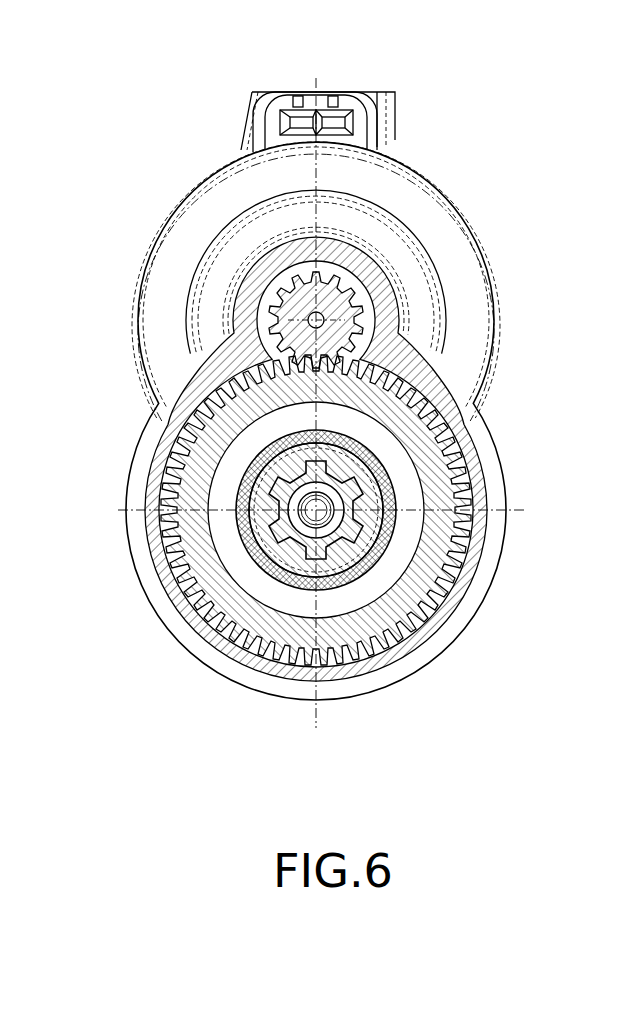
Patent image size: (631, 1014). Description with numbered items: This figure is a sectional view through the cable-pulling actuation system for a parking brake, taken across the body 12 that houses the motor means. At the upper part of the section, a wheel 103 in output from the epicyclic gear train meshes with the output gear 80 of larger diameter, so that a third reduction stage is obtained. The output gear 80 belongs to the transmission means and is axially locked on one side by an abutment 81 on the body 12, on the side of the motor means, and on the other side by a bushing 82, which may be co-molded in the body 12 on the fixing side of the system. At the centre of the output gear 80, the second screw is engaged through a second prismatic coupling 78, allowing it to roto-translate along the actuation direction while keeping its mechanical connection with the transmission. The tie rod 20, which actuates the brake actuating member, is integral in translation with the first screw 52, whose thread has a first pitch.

The body 12 is at (187, 257).
The wheel 103 is at (365, 330).
The output gear 80 is at (202, 462).
The tie rod 20 is at (363, 493).
The abutment 81 is at (480, 528).
The bushing 82 is at (266, 565).
The first screw 52 is at (363, 567).
The second prismatic coupling 78 is at (325, 555).